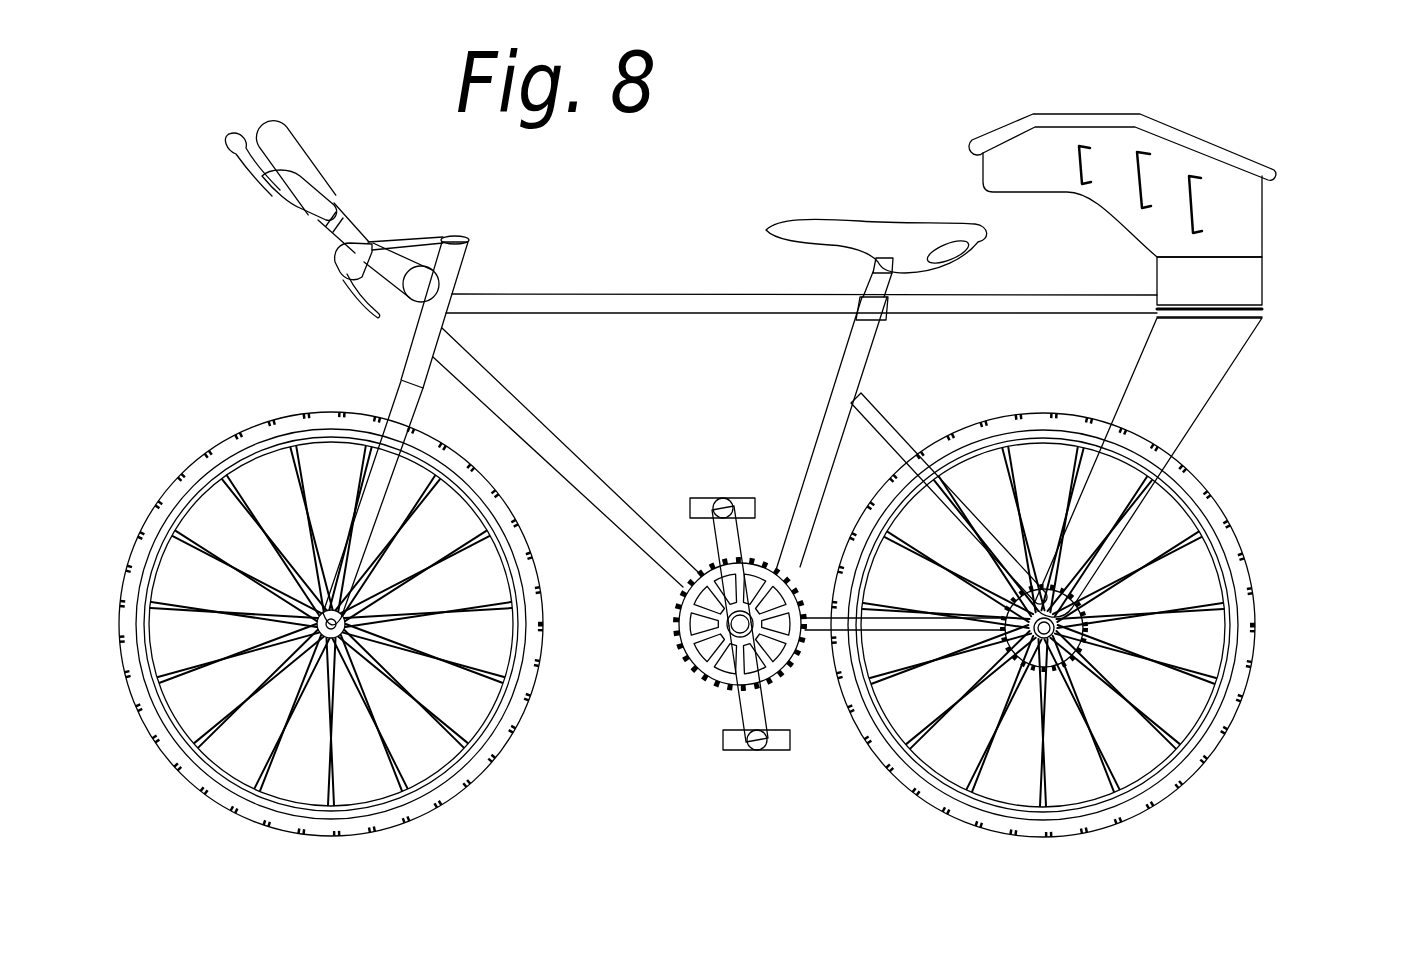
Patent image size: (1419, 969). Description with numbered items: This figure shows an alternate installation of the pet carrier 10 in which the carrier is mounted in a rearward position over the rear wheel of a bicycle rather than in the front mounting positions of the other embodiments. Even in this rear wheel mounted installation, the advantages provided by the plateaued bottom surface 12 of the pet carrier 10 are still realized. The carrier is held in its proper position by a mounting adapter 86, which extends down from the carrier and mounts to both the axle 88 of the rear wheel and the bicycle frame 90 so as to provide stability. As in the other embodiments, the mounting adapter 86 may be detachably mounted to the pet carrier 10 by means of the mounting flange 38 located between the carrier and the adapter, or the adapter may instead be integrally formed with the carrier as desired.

The pet carrier 10 is at (1186, 106).
The plateaued bottom surface 12 is at (1042, 217).
The mounting flange 38 is at (1213, 317).
The mounting adapter 86 is at (1183, 387).
The axle 88 is at (1058, 608).
The bicycle frame 90 is at (870, 313).